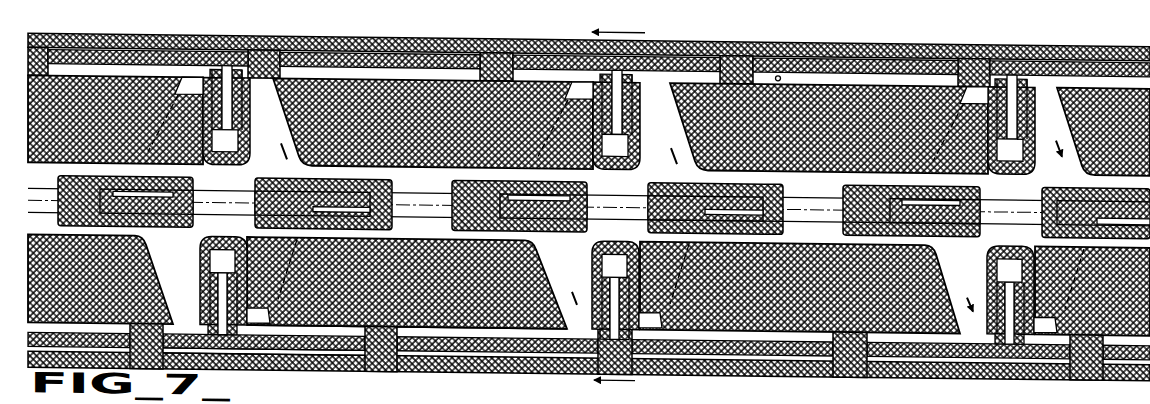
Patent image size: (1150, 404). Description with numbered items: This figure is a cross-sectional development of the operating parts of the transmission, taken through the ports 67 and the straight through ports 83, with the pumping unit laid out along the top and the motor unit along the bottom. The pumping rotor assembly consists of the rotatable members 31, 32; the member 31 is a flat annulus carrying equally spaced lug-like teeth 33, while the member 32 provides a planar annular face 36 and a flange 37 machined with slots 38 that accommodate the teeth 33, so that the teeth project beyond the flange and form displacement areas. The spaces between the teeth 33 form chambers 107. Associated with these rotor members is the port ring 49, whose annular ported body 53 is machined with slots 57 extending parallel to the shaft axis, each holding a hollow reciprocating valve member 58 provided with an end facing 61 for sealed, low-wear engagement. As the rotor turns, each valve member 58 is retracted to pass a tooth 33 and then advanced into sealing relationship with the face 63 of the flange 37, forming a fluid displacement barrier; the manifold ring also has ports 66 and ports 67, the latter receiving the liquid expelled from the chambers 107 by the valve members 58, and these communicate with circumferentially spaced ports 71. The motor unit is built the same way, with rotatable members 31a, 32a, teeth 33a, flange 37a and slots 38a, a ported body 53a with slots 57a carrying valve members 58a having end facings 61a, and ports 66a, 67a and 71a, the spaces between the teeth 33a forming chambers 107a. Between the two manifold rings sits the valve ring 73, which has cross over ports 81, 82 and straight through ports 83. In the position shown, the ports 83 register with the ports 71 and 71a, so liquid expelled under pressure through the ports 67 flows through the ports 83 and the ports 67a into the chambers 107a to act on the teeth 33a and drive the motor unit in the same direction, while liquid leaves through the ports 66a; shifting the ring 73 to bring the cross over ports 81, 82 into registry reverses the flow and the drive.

The rotatable member 31 is at (701, 29).
The rotatable member 31a is at (1108, 340).
The rotatable member 32 is at (828, 55).
The rotatable member 32a is at (922, 337).
The teeth 33 is at (267, 54).
The teeth 33a is at (380, 333).
The planar annular face 36 is at (912, 49).
The flange 37 is at (870, 51).
The flange 37a is at (493, 337).
The slots 38 is at (968, 36).
The slots 38a is at (362, 348).
The port ring 49 is at (527, 97).
The annular ported body 53 is at (453, 78).
The annular ported body 53a is at (722, 308).
The slots 57 is at (236, 137).
The slots 57a is at (996, 257).
The valve member 58 is at (234, 106).
The valve member 58a is at (603, 263).
The end facing 61 is at (213, 65).
The end facing 61a is at (643, 315).
The face 63 is at (779, 64).
The ports 66 is at (188, 78).
The ports 66a is at (257, 315).
The ports 67 is at (277, 130).
The ports 67a is at (190, 281).
The ports 71 is at (648, 185).
The ports 71a is at (648, 220).
The valve ring 73 is at (1077, 188).
The cross over ports 81 is at (167, 188).
The cross over ports 82 is at (370, 212).
The straight through ports 83 is at (437, 183).
The chambers 107 is at (360, 68).
The chambers 107a is at (437, 328).